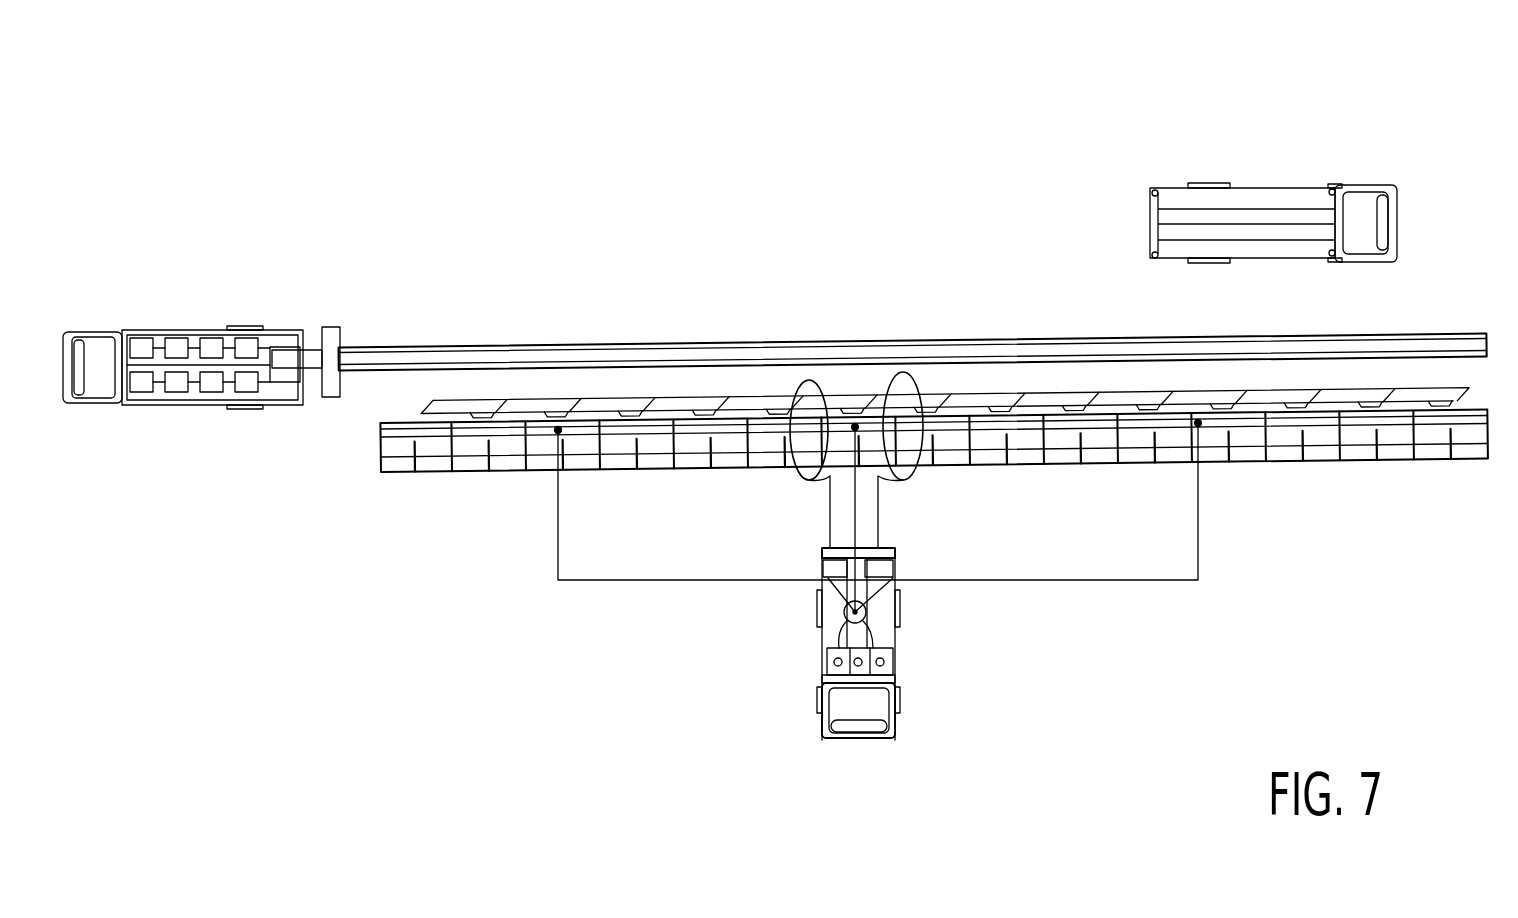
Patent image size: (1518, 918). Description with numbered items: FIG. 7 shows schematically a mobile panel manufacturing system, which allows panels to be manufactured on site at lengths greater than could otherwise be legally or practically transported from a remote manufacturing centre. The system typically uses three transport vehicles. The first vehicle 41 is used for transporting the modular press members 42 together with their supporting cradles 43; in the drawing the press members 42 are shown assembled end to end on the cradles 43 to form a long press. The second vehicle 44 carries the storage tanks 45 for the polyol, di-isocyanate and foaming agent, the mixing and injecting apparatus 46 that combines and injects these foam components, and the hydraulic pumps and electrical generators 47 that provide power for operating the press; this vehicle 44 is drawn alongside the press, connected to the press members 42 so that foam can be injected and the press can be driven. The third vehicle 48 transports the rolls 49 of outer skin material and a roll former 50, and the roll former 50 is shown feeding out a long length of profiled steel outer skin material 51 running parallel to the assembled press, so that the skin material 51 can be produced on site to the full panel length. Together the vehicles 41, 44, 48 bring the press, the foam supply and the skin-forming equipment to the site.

The vehicle 41 is at (1363, 200).
The modular press members 42 is at (1440, 440).
The supporting cradles 43 is at (1372, 462).
The vehicle 44 is at (842, 716).
The storage tanks 45 is at (826, 661).
The mixing and injecting apparatus 46 is at (844, 607).
The hydraulic pumps and electrical generators 47 is at (822, 553).
The vehicle 48 is at (92, 348).
The rolls 49 is at (268, 340).
The roll former 50 is at (345, 337).
The steel outer skin material 51 is at (695, 345).